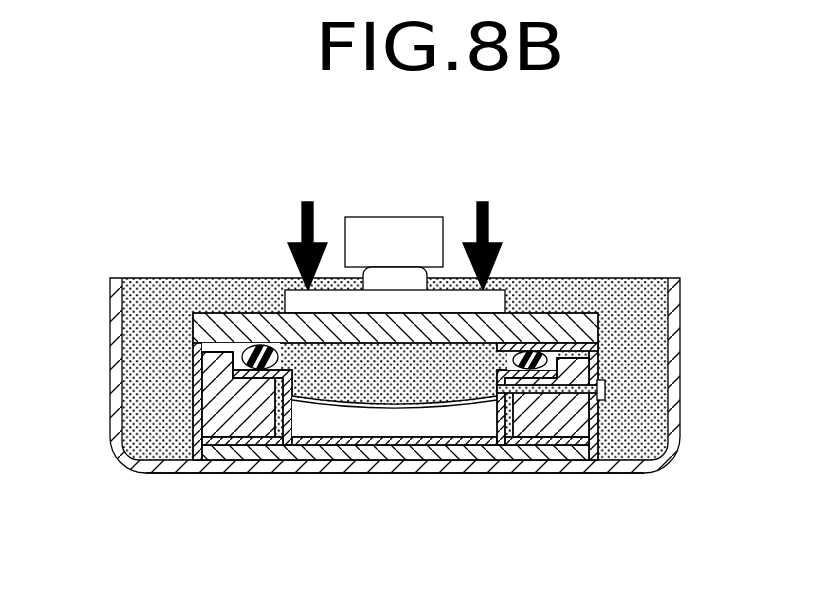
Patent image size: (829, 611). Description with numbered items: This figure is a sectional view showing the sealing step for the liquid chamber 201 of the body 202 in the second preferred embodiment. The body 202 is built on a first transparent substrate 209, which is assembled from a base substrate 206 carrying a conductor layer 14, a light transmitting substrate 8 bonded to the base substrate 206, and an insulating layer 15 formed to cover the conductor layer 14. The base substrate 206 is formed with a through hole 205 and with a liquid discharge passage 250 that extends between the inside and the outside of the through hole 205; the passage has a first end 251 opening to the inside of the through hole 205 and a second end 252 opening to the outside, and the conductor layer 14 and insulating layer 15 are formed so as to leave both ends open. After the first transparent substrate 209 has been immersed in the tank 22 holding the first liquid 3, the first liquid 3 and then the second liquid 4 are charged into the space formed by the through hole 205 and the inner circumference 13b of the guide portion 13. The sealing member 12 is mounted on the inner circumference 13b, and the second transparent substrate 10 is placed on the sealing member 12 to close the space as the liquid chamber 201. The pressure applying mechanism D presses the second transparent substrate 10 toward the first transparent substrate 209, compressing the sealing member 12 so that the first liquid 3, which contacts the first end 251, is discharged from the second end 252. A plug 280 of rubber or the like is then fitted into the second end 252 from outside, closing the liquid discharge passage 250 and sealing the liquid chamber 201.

The first liquid 3 is at (398, 404).
The second liquid 4 is at (342, 423).
The light transmitting substrate 8 is at (445, 450).
The second transparent substrate 10 is at (217, 322).
The sealing member 12 is at (260, 346).
The guide portion 13 is at (220, 362).
The inner circumference of the guide portion 13b is at (230, 348).
The conductor layer 14 is at (558, 440).
The insulating layer 15 is at (492, 440).
The tank 22 is at (680, 290).
The liquid chamber 201 is at (308, 447).
The body 202 is at (590, 308).
The through hole 205 is at (260, 448).
The base substrate 206 is at (572, 423).
The first transparent substrate 209 is at (370, 461).
The liquid discharge passage 250 is at (568, 365).
The first end 251 is at (528, 345).
The second end 252 is at (607, 392).
The plug 280 is at (607, 380).
The pressure applying mechanism D is at (393, 217).